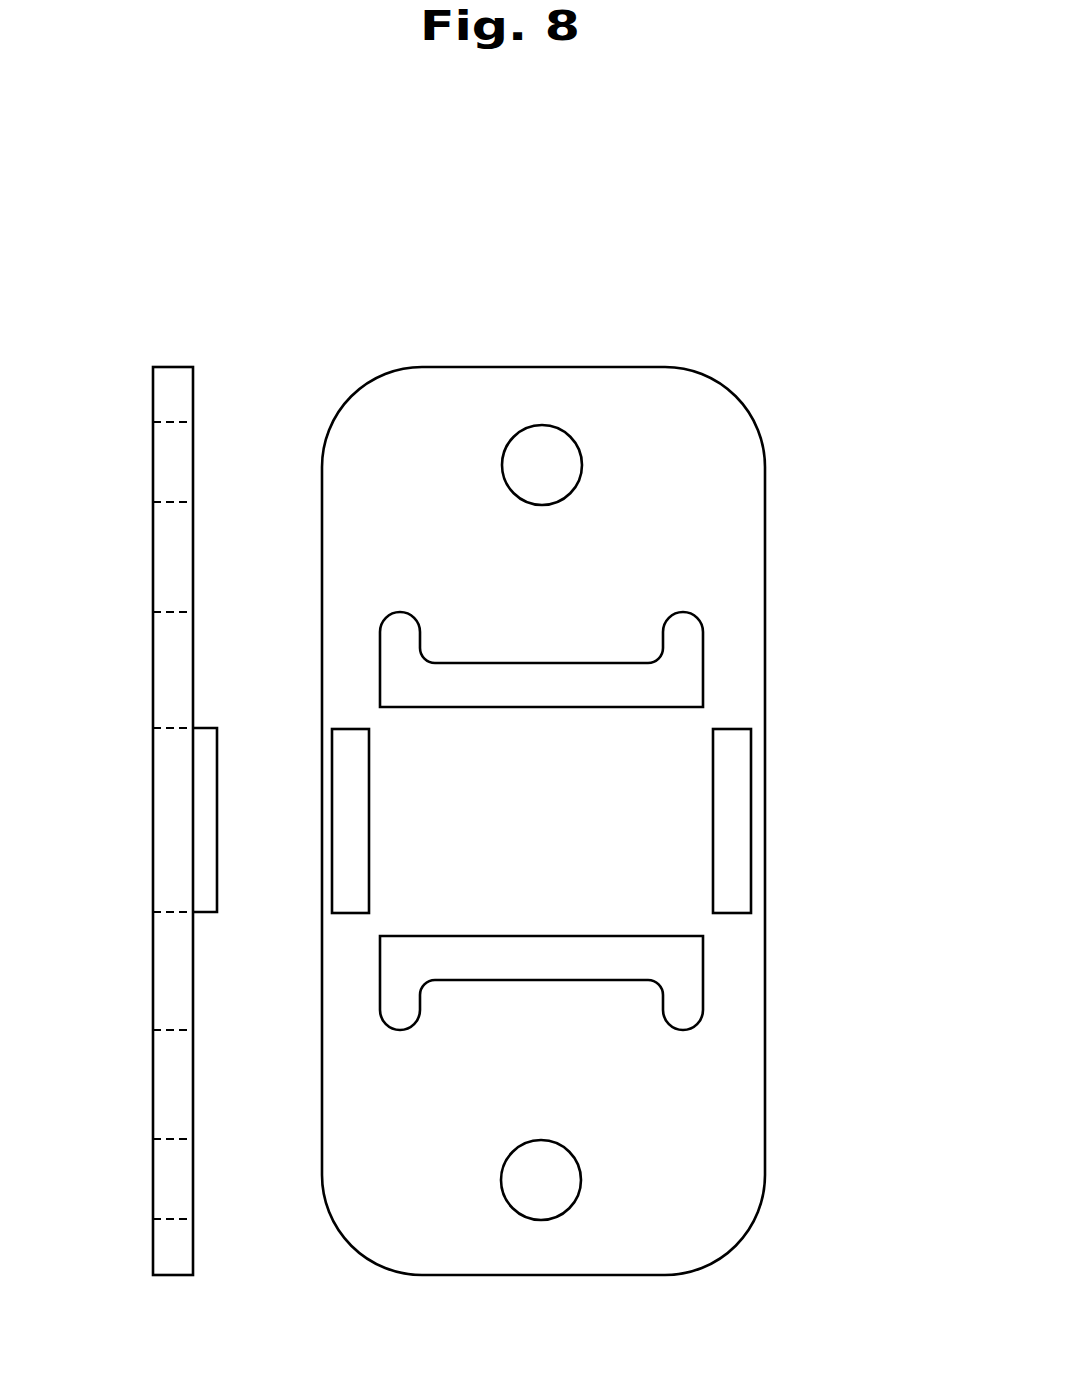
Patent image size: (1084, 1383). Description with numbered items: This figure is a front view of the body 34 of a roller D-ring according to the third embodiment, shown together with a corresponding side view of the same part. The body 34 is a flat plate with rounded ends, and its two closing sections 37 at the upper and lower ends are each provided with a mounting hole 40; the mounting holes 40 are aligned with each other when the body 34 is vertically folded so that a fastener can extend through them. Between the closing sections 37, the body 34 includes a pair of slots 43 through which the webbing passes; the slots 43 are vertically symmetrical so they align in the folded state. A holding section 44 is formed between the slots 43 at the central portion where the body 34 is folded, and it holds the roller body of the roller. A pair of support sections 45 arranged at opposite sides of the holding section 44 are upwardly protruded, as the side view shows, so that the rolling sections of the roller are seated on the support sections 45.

The body 34 is at (218, 372).
The closing section 37 is at (556, 548).
The mounting hole 40 is at (562, 442).
The slot 43 is at (684, 633).
The holding section 44 is at (172, 842).
The support section 45 is at (736, 803).